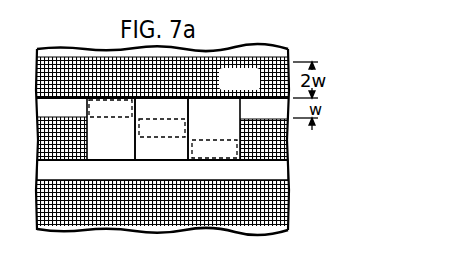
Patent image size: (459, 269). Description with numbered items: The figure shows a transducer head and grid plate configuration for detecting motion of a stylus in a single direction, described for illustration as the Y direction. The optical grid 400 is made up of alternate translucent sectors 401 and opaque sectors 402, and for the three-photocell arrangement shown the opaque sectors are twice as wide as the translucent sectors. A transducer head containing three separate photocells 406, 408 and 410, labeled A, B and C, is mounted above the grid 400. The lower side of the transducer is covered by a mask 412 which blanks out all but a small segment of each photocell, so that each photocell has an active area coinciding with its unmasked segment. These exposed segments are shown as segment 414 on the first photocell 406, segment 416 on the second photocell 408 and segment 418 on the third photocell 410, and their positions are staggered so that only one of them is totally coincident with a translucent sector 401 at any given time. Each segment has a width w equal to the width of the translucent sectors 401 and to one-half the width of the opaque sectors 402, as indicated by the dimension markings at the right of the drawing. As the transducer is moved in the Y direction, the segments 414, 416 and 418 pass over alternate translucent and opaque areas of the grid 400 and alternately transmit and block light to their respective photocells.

The optical grid 400 is at (294, 213).
The translucent sectors 401 is at (288, 175).
The opaque sectors 402 is at (288, 150).
The photocell 406 is at (105, 162).
The photocell 408 is at (170, 162).
The photocell 410 is at (223, 162).
The mask 412 is at (162, 77).
The exposed segment 414 is at (112, 119).
The exposed segment 416 is at (180, 118).
The exposed segment 418 is at (236, 139).